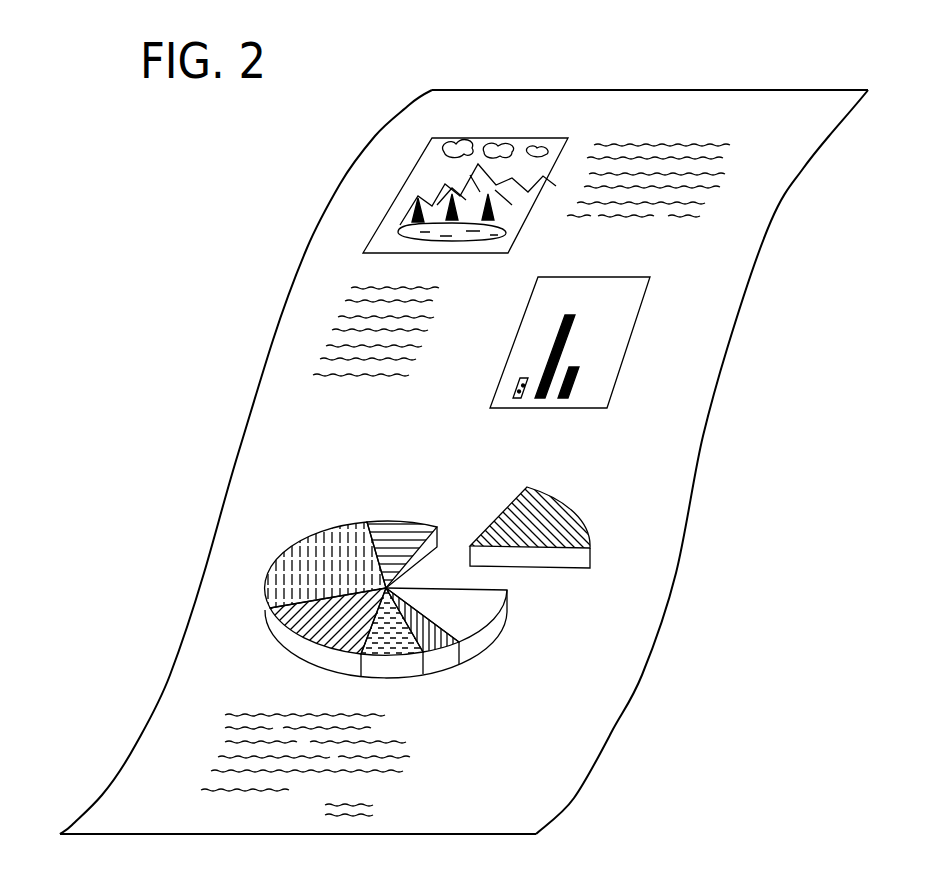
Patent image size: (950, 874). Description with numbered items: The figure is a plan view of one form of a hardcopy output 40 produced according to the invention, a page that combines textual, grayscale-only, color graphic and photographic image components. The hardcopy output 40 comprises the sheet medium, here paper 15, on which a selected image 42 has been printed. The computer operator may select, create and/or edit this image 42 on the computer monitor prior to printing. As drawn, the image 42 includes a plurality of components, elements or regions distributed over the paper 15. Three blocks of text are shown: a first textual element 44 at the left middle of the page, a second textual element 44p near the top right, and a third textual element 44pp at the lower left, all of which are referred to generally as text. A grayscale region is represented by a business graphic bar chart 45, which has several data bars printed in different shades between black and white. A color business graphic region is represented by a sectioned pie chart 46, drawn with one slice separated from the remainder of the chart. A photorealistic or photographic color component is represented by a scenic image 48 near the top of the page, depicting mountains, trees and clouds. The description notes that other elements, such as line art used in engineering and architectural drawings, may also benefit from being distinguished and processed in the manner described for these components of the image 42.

The hardcopy output 40 is at (133, 244).
The image 42 is at (734, 111).
The paper 15 is at (290, 431).
The scenic image 48 is at (428, 164).
The textual element 44 is at (337, 330).
The textual element 44p is at (683, 204).
The textual element 44pp is at (228, 757).
The business graphic bar chart 45 is at (615, 349).
The sectioned pie chart 46 is at (478, 641).